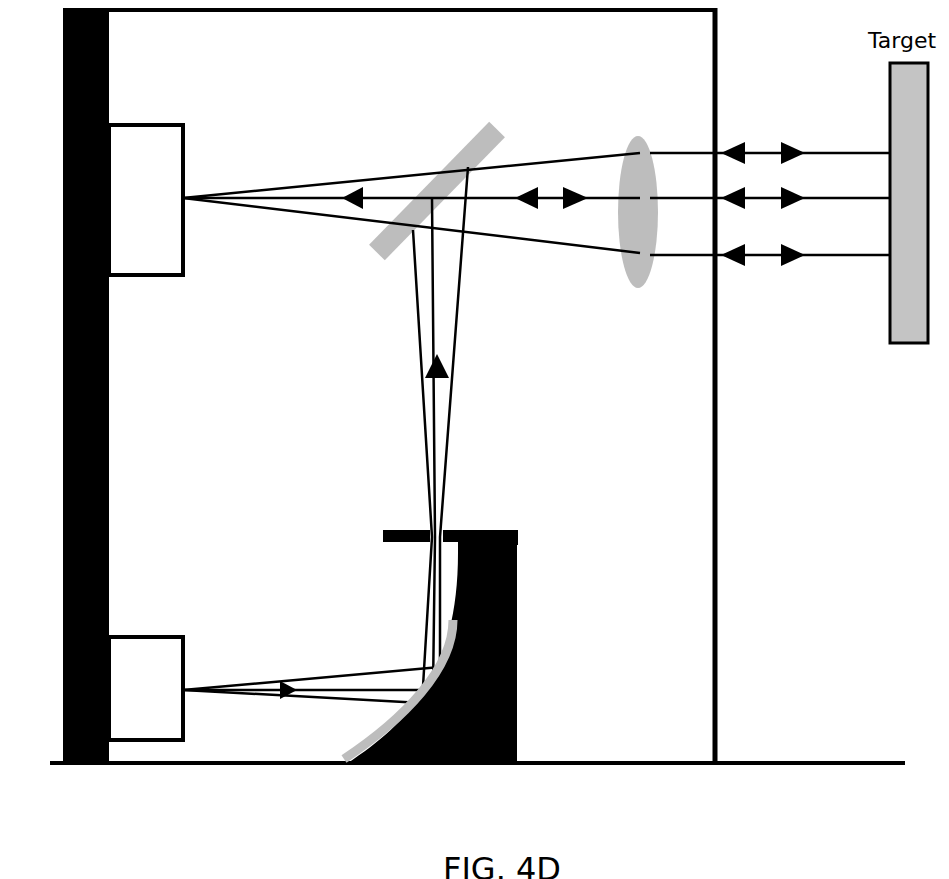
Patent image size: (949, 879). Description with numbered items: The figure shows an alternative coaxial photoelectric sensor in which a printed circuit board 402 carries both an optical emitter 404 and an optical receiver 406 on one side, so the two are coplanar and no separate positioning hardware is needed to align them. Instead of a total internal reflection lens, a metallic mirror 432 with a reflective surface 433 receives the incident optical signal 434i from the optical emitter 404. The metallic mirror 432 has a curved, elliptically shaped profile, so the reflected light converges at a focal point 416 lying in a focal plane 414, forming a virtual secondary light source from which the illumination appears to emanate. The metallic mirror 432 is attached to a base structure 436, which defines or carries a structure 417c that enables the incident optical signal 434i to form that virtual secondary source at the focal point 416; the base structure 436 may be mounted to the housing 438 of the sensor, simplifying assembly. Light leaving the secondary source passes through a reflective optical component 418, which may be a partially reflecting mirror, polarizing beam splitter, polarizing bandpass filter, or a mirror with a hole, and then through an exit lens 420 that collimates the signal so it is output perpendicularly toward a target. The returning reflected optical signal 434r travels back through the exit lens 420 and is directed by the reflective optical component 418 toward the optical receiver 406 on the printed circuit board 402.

The printed circuit board 402 is at (110, 80).
The optical emitter 404 is at (165, 635).
The optical receiver 406 is at (166, 125).
The focal plane 414 is at (376, 530).
The focal point 416 is at (450, 523).
The structure 417c is at (520, 535).
The reflective optical component 418 is at (470, 150).
The exit lens 420 is at (648, 142).
The metallic mirror 432 is at (350, 742).
The reflective surface 433 is at (370, 735).
The incident optical signal 434i is at (790, 283).
The reflected optical signal 434r is at (346, 232).
The base structure 436 is at (520, 622).
The housing 438 is at (477, 414).